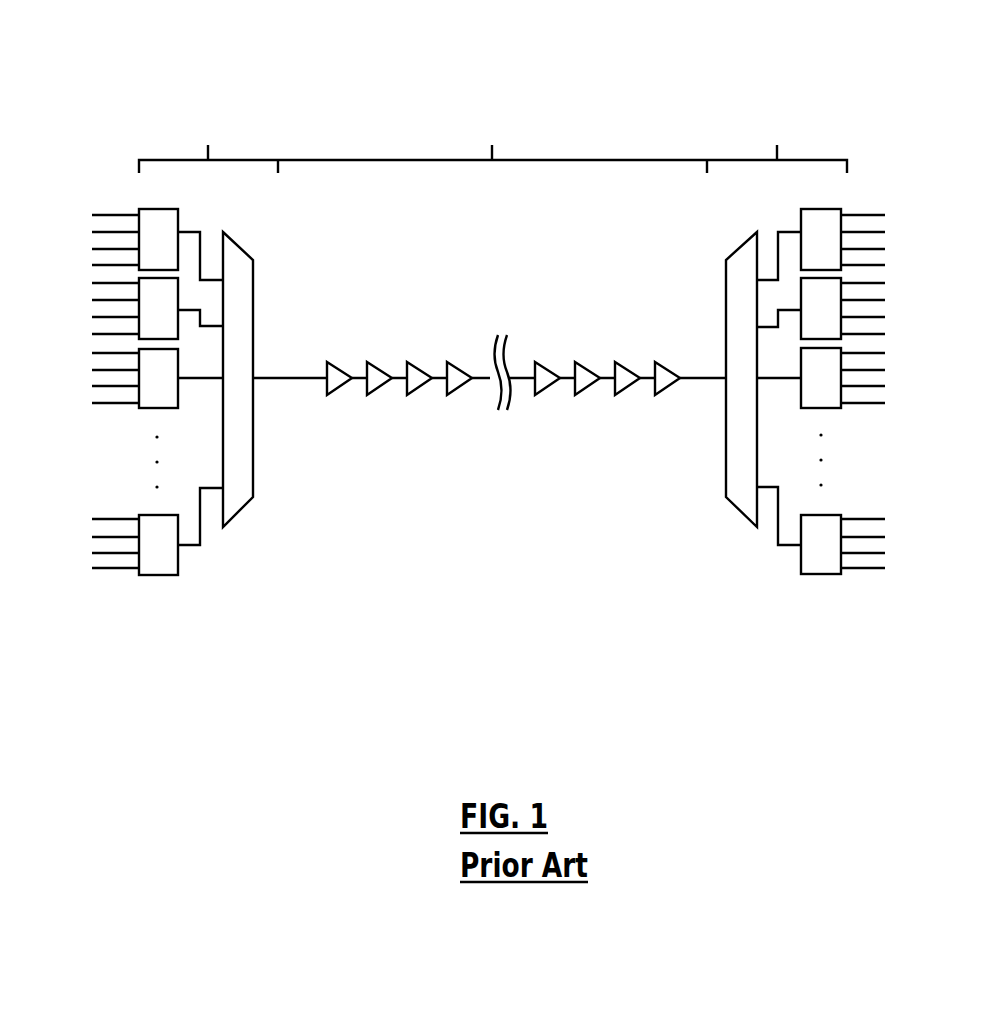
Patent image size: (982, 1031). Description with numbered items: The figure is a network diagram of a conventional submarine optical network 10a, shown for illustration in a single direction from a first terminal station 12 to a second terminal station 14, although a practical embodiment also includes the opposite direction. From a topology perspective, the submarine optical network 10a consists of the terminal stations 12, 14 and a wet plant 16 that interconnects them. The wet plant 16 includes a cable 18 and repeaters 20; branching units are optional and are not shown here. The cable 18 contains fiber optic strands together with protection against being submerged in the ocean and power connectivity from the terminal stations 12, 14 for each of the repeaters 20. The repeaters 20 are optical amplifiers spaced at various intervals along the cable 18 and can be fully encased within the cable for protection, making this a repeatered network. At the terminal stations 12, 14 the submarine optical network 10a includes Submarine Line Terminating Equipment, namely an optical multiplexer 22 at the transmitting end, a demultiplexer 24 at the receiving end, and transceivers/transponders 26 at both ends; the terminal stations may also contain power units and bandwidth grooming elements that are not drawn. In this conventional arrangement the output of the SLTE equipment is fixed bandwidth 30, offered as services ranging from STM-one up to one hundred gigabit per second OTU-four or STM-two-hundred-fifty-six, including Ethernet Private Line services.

The submarine optical network 10a is at (522, 28).
The first terminal station 12 is at (209, 121).
The second terminal station 14 is at (779, 121).
The wet plant 16 is at (494, 121).
The cable 18 is at (312, 378).
The repeaters 20 is at (340, 370).
The optical multiplexers 22 is at (246, 248).
The demultiplexers 24 is at (726, 472).
The transceivers/transponders 26 is at (179, 209).
The fixed bandwidth 30 is at (62, 262).